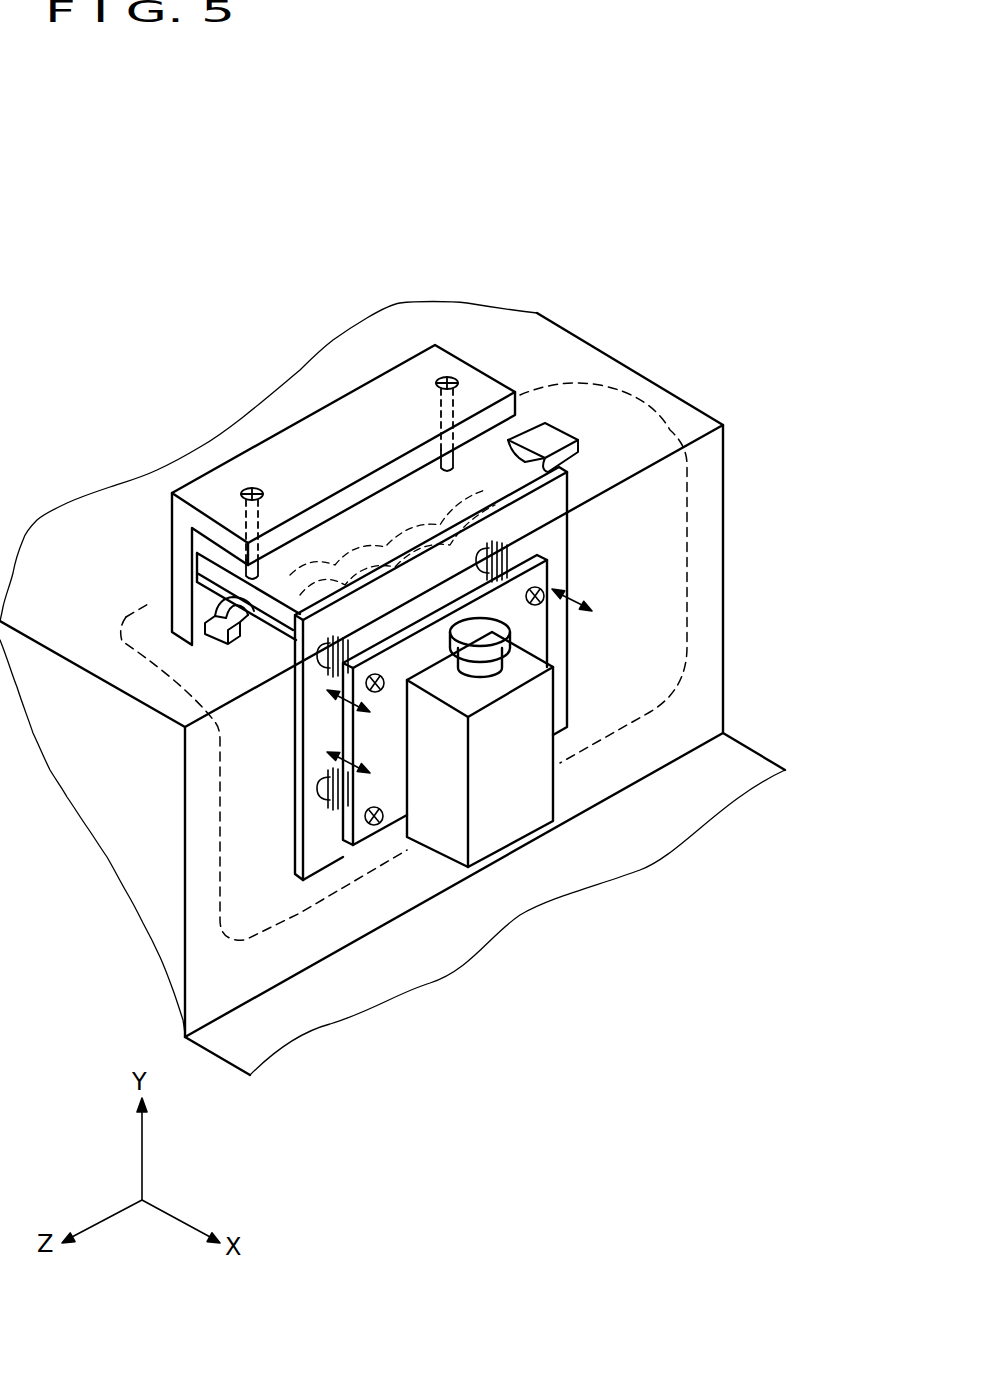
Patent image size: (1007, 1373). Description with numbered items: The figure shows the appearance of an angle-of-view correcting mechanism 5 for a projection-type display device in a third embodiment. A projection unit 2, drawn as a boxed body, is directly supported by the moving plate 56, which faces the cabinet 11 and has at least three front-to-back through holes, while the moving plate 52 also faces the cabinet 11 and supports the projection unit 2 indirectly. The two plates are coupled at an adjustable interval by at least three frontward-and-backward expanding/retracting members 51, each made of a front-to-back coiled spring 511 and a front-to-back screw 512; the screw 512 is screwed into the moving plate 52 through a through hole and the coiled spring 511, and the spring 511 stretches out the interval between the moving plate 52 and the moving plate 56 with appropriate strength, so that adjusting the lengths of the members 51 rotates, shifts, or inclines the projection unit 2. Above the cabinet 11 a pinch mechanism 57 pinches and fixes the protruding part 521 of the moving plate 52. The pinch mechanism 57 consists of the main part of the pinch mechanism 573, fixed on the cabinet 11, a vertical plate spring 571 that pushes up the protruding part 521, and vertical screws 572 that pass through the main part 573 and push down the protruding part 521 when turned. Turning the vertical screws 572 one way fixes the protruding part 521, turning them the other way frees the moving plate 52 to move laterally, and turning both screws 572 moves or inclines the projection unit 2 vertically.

The projection unit 2 is at (552, 787).
The angle-of-view correcting mechanism 5 is at (114, 631).
The cabinet 11 is at (133, 840).
The frontward-and-backward expanding/retracting member 51 is at (546, 788).
The front-to-back coiled spring 511 is at (512, 560).
The front-to-back screw 512 is at (547, 582).
The moving plate 52 is at (296, 594).
The protruding part 521 is at (235, 618).
The moving plate 56 is at (450, 605).
The pinch mechanism 57 is at (402, 412).
The vertical plate spring 571 is at (555, 438).
The vertical screws 572 is at (455, 380).
The main part of the pinch mechanism 573 is at (448, 350).